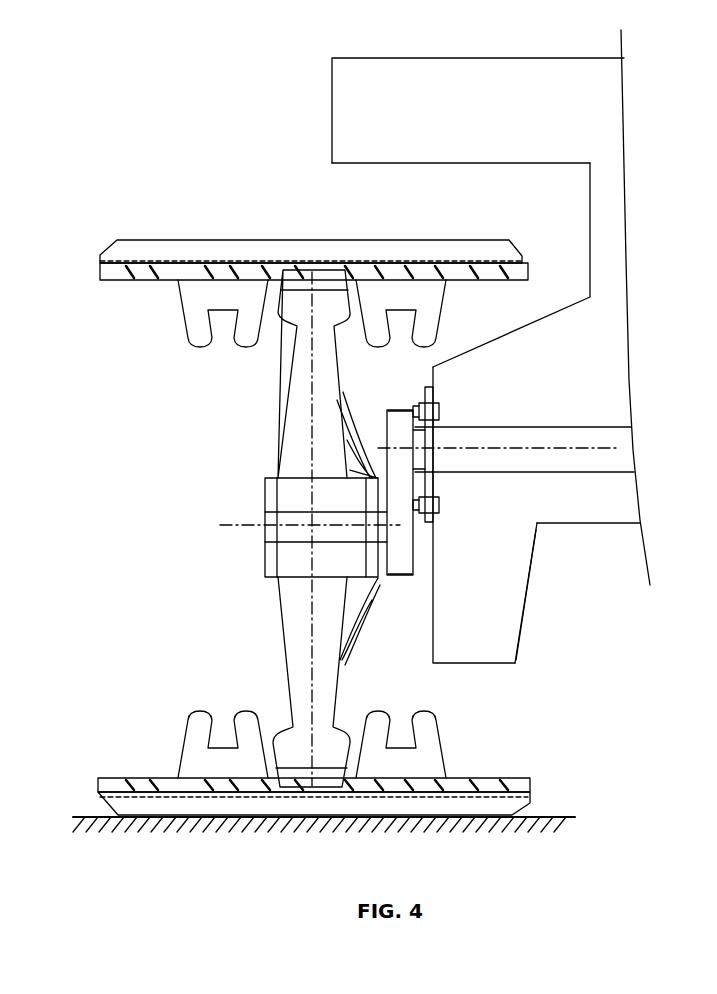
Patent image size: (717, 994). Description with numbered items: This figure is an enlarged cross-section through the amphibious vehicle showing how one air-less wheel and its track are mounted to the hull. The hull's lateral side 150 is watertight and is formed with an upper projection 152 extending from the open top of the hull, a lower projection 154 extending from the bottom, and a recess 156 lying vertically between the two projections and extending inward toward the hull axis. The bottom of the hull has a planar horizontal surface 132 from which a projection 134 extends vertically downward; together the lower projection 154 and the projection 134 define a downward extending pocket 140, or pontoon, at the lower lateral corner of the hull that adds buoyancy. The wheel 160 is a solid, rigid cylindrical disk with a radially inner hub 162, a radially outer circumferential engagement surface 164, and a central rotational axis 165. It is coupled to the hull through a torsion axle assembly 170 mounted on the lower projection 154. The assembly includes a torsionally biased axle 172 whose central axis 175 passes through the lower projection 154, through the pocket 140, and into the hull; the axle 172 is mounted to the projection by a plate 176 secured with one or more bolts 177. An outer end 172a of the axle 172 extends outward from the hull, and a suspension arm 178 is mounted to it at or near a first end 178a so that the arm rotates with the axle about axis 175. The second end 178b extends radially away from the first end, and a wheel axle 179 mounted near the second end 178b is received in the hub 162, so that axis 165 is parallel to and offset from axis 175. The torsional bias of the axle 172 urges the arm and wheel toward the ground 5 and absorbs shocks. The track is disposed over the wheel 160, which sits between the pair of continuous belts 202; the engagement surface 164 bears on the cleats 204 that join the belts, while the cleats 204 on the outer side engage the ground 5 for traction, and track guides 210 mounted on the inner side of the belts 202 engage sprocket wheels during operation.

The ground 5 is at (565, 817).
The planar horizontal surface 132 is at (620, 524).
The projection 134 is at (520, 637).
The pocket 140 is at (564, 603).
The lateral side 150 is at (448, 377).
The upper projection 152 is at (333, 95).
The lower projection 154 is at (435, 637).
The recess 156 is at (572, 213).
The wheel 160 is at (289, 485).
The hub 162 is at (267, 568).
The circumferential engagement surface 164 is at (303, 272).
The central axis 165 is at (253, 523).
The torsion axle assembly 170 is at (507, 471).
The torsionally biased axle 172 is at (454, 425).
The outer end 172a is at (413, 442).
The central axis 175 is at (523, 447).
The plate 176 is at (434, 483).
The bolt 177 is at (437, 407).
The suspension arm 178 is at (315, 512).
The first end 178a is at (403, 410).
The second end 178b is at (398, 577).
The wheel axle 179 is at (302, 542).
The belt 202 is at (100, 270).
The engagement cleat 204 is at (152, 238).
The track guide 210 is at (182, 306).